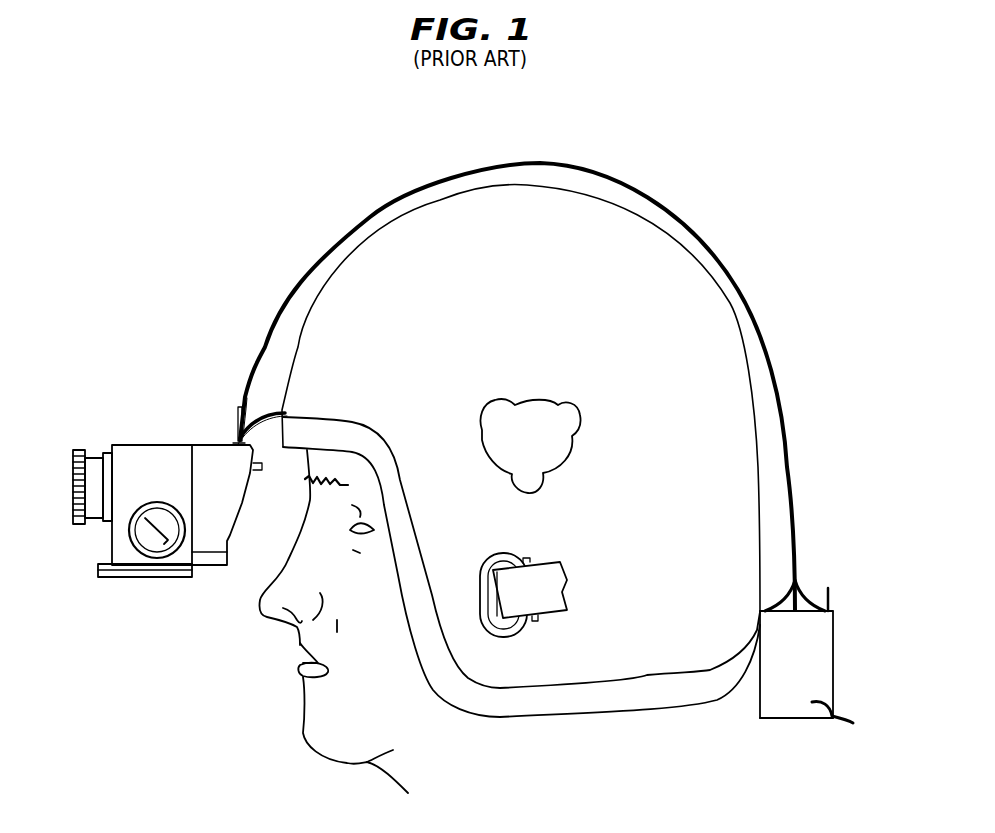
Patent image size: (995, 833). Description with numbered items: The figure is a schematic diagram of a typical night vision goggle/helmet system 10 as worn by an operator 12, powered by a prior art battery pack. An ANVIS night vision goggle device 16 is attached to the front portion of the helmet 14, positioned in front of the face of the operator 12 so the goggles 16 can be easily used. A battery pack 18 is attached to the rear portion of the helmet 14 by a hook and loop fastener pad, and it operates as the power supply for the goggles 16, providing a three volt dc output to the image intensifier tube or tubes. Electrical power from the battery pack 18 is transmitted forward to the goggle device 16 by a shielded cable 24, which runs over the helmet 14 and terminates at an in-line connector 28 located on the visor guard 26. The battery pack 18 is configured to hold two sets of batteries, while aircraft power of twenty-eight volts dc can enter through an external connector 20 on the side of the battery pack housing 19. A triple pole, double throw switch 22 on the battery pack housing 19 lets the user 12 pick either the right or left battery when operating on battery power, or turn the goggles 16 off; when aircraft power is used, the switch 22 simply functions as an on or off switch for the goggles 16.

The night vision goggle/helmet system 10 is at (289, 180).
The operator 12 is at (303, 725).
The helmet 14 is at (527, 309).
The night vision goggle device 16 is at (103, 523).
The battery pack 18 is at (790, 719).
The battery pack housing 19 is at (818, 657).
The external connector 20 is at (828, 697).
The triple pole, double throw switch 22 is at (833, 598).
The shielded cable 24 is at (740, 290).
The visor guard 26 is at (262, 410).
The in-line connector 28 is at (238, 422).